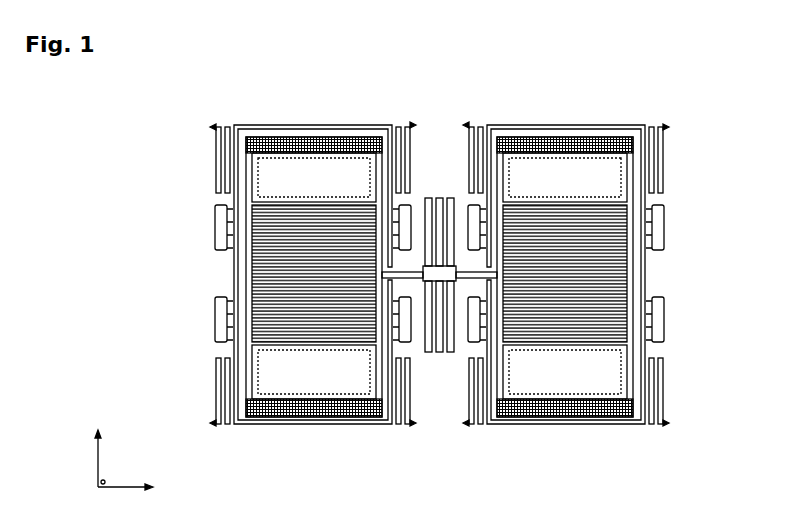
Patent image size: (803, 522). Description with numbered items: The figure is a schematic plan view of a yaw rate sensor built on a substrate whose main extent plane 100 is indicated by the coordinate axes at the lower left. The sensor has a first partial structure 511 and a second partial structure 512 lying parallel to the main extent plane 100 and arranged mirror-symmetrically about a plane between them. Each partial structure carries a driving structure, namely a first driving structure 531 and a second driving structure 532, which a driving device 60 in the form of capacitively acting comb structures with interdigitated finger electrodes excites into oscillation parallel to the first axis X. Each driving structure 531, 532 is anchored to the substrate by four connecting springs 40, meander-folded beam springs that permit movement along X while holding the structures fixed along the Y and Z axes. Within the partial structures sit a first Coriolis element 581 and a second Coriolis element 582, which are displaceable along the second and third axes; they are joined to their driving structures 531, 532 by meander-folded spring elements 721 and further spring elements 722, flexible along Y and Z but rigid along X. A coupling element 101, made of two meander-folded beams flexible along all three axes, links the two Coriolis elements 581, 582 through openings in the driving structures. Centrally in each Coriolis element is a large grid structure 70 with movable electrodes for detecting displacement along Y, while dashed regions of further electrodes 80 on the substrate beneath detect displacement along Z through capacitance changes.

The connecting springs 40 is at (224, 115).
The driving device 60 is at (216, 223).
The grid structure 70 is at (280, 277).
The further electrodes 80 is at (282, 175).
The main extent plane 100 is at (147, 458).
The coupling element 101 is at (443, 190).
The first partial structure 511 is at (276, 128).
The second partial structure 512 is at (538, 128).
The first driving structure 531 is at (237, 351).
The second driving structure 532 is at (641, 350).
The first Coriolis element 581 is at (330, 398).
The second Coriolis element 582 is at (560, 398).
The spring elements 721 is at (345, 140).
The further spring elements 722 is at (609, 137).